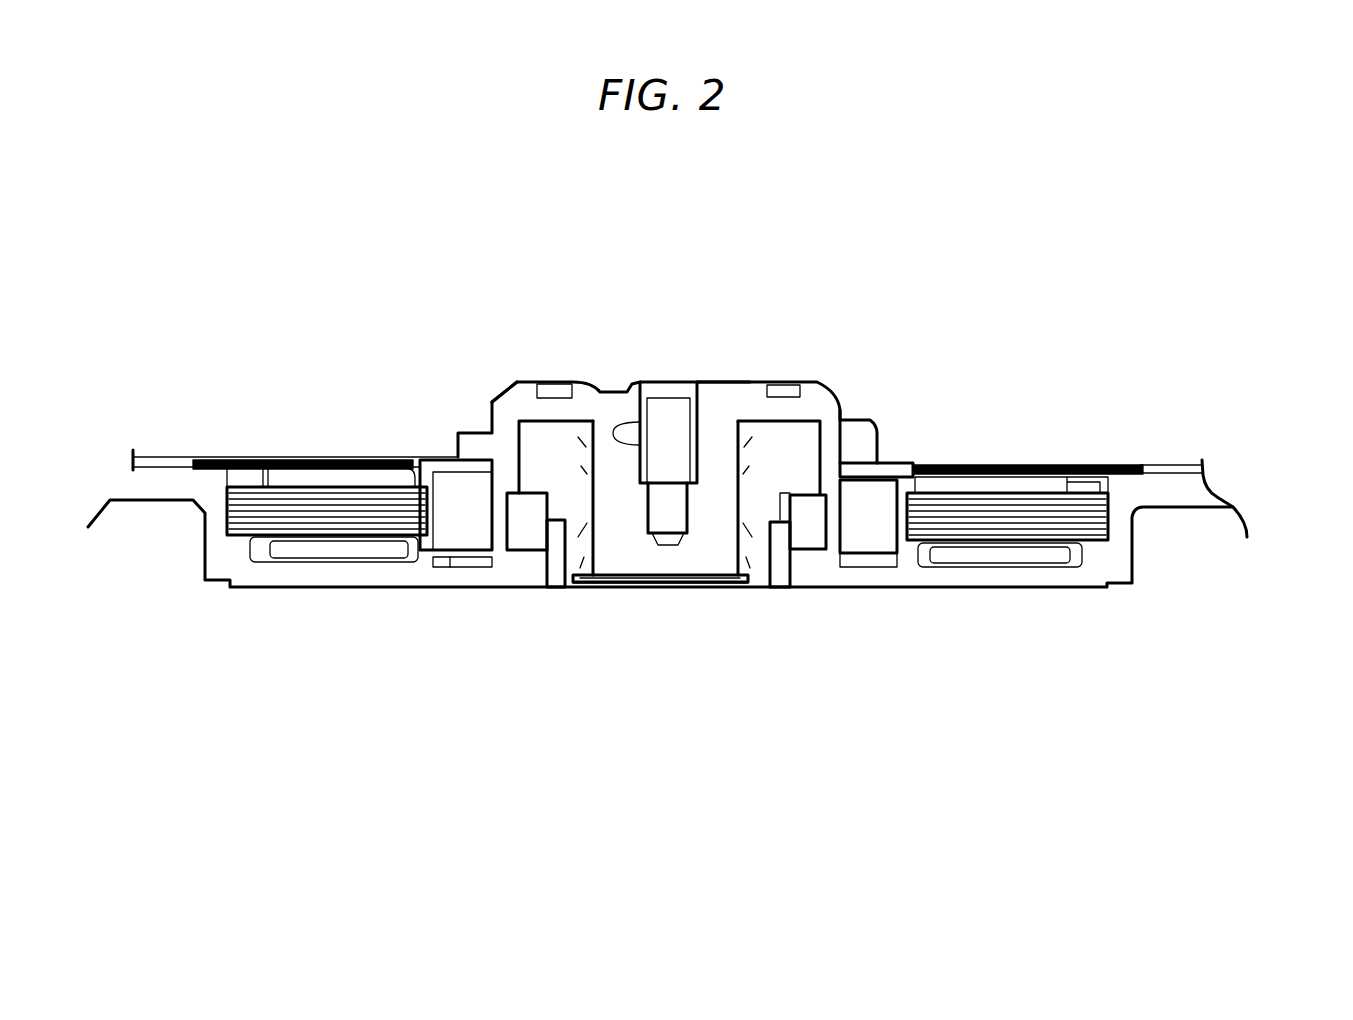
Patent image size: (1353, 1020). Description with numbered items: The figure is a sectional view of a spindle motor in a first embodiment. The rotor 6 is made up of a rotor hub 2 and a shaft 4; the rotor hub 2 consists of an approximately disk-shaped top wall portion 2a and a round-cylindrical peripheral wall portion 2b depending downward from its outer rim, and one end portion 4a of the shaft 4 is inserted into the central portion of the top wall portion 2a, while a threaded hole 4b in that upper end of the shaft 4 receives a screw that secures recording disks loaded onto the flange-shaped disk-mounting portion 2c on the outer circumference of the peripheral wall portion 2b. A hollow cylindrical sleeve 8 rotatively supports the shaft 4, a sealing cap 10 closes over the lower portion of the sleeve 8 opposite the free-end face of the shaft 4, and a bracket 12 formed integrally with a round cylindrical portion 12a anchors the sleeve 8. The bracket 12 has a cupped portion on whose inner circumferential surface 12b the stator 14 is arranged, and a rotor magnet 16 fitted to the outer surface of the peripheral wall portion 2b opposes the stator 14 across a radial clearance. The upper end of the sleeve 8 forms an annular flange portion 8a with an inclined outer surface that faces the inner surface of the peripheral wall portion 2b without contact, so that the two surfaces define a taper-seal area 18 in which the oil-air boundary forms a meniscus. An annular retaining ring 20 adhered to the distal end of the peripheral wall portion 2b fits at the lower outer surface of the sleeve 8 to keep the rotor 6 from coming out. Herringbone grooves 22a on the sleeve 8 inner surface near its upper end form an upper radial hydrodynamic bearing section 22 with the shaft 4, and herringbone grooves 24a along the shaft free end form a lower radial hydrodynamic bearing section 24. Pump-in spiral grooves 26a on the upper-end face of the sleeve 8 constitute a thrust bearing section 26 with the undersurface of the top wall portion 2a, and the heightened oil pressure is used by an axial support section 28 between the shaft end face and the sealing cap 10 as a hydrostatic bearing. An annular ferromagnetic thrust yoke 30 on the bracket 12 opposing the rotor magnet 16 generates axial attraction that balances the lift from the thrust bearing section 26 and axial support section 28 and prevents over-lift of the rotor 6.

The rotor hub 2 is at (820, 382).
The top wall portion 2a is at (752, 400).
The peripheral wall portion 2b is at (413, 467).
The disk-mounting portion 2c is at (860, 442).
The shaft 4 is at (630, 527).
The end portion 4a is at (665, 415).
The threaded hole 4b is at (620, 396).
The rotor 6 is at (708, 386).
The sleeve 8 is at (767, 460).
The flange portion 8a is at (503, 490).
The sealing cap 10 is at (732, 578).
The bracket 12 is at (1108, 567).
The round cylindrical portion 12a is at (778, 545).
The inner circumferential surface 12b is at (1115, 465).
The stator 14 is at (997, 486).
The rotor magnet 16 is at (420, 540).
The taper-seal area 18 is at (830, 518).
The retaining ring 20 is at (800, 530).
The upper radial hydrodynamic bearing section 22 is at (600, 418).
The herringbone grooves 22a is at (590, 460).
The lower radial hydrodynamic bearing section 24 is at (605, 580).
The herringbone grooves 24a is at (587, 527).
The thrust bearing section 26 is at (557, 408).
The pump-in spiral grooves 26a is at (548, 410).
The axial support section 28 is at (674, 578).
The thrust yoke 30 is at (453, 563).